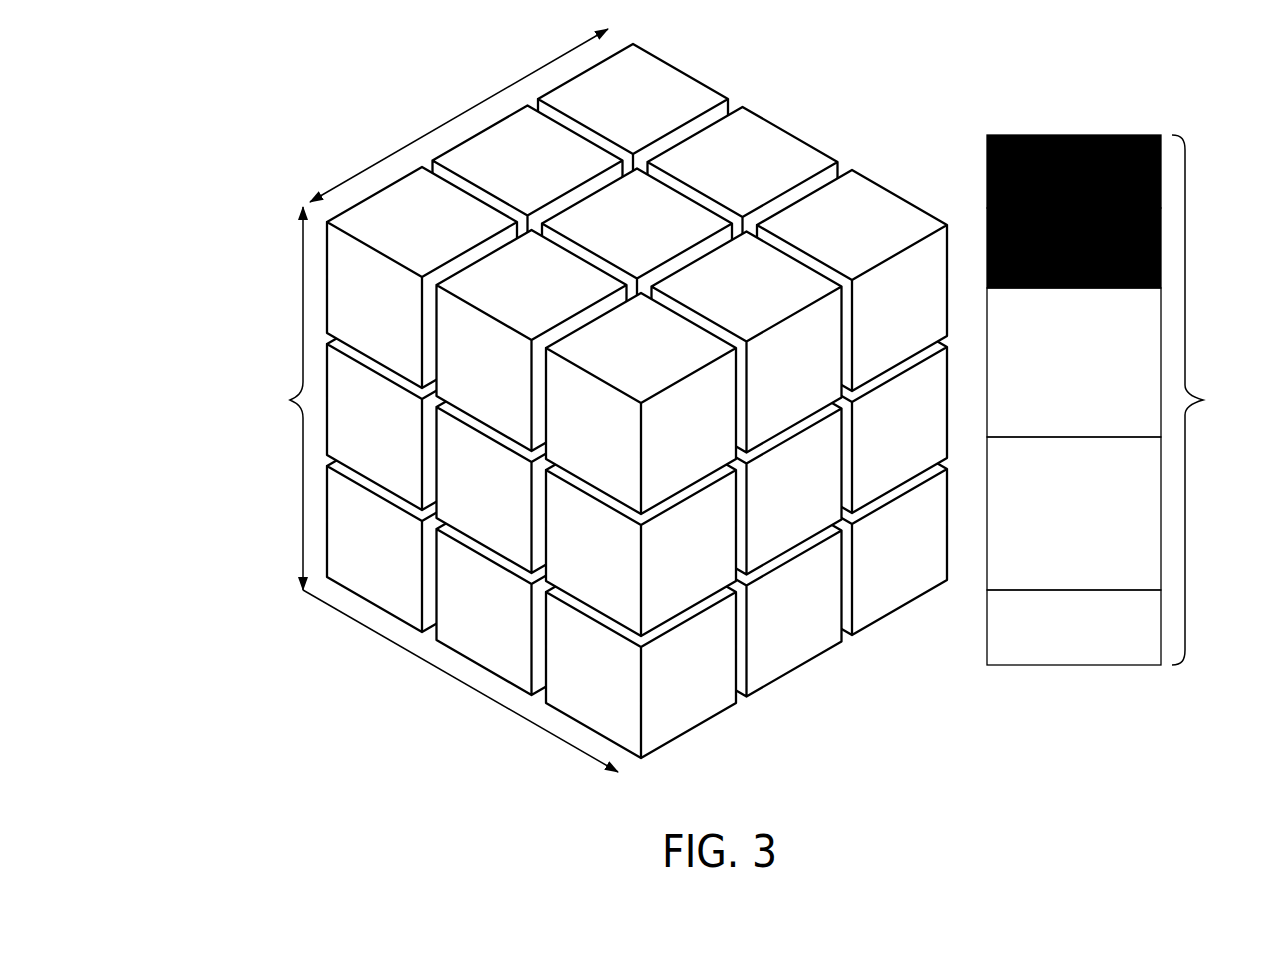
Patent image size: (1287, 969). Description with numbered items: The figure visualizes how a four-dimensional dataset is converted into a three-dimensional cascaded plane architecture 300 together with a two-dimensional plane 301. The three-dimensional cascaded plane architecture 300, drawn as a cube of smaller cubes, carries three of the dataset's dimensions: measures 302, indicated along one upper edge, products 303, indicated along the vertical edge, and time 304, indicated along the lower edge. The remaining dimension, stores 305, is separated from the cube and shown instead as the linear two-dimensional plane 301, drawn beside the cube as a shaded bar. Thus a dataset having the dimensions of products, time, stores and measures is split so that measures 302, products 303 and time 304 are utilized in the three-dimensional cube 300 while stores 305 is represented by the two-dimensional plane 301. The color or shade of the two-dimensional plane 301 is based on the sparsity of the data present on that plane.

The three-dimensional cascaded plane architecture 300 is at (900, 197).
The two-dimensional plane 301 is at (1075, 135).
The measures 302 is at (456, 117).
The products 303 is at (250, 398).
The time 304 is at (455, 681).
The stores 305 is at (1220, 400).